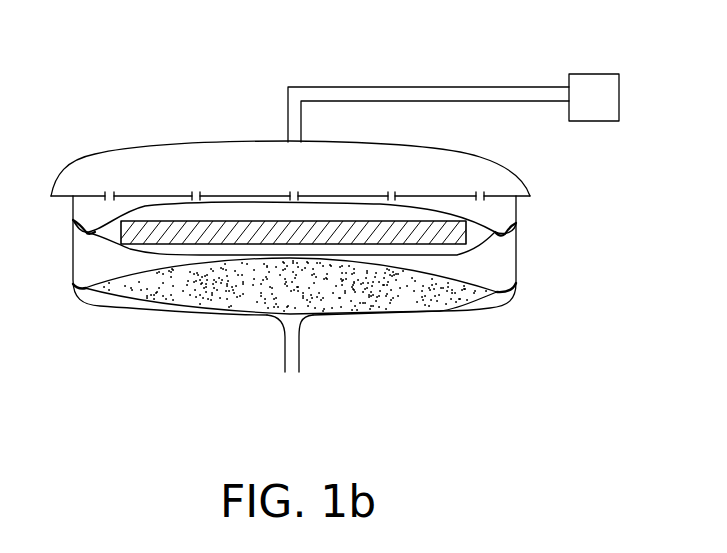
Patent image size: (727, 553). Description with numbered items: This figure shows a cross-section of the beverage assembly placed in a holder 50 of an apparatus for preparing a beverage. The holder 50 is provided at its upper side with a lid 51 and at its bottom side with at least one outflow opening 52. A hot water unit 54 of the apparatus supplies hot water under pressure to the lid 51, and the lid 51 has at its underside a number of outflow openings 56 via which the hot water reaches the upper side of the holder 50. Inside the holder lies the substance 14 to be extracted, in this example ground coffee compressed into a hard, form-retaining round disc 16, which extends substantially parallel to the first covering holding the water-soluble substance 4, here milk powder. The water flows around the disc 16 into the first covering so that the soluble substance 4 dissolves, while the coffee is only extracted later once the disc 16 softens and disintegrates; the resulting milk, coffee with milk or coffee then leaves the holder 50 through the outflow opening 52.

The water-soluble substance 4 is at (187, 292).
The substance to be extracted 14 is at (275, 137).
The disc 16 is at (163, 232).
The holder 50 is at (467, 308).
The lid 51 is at (237, 167).
The outflow opening 52 is at (300, 345).
The hot water unit 54 is at (587, 88).
The outflow openings 56 is at (483, 199).